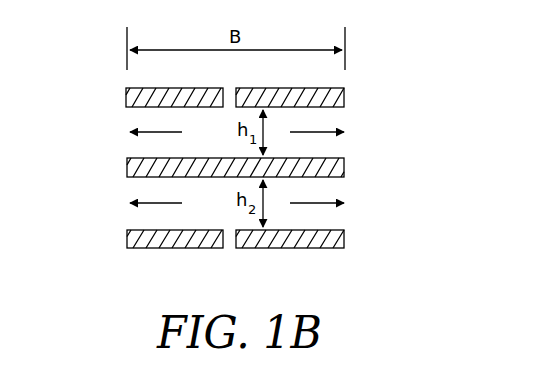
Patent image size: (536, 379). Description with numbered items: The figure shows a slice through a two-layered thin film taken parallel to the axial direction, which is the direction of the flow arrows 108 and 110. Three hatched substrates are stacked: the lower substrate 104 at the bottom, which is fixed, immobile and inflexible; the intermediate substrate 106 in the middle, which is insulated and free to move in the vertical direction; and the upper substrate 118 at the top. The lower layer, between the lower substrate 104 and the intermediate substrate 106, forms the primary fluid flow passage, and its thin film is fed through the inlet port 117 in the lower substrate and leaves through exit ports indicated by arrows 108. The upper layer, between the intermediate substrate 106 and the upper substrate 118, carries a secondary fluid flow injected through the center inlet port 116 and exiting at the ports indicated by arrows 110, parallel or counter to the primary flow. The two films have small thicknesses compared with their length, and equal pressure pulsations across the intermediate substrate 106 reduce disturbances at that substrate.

The lower substrate 104 is at (345, 237).
The intermediate substrate 106 is at (345, 166).
The primary fluid flow direction arrow 108 is at (236, 204).
The secondary fluid flow direction arrow 110 is at (235, 133).
The inlet port for the secondary fluid flow 116 is at (228, 86).
The inlet port for the primary fluid flow 117 is at (227, 251).
The upper substrate 118 is at (345, 95).